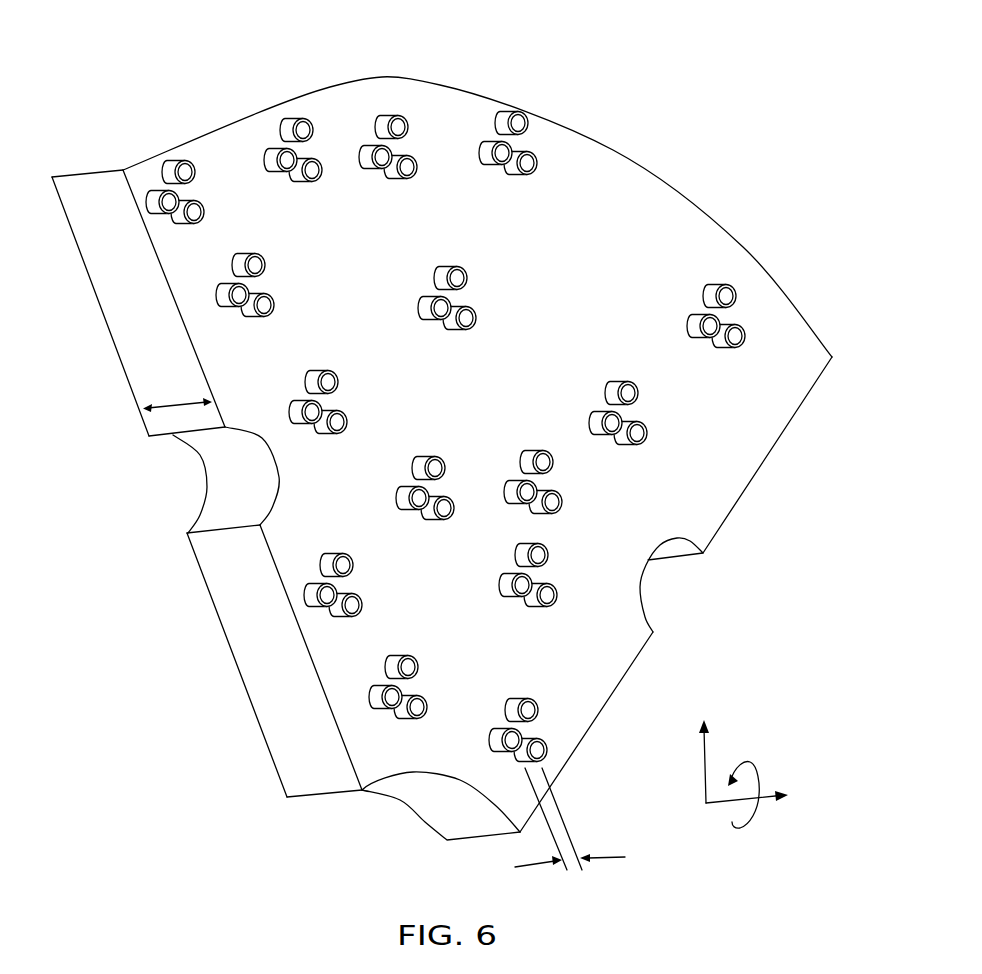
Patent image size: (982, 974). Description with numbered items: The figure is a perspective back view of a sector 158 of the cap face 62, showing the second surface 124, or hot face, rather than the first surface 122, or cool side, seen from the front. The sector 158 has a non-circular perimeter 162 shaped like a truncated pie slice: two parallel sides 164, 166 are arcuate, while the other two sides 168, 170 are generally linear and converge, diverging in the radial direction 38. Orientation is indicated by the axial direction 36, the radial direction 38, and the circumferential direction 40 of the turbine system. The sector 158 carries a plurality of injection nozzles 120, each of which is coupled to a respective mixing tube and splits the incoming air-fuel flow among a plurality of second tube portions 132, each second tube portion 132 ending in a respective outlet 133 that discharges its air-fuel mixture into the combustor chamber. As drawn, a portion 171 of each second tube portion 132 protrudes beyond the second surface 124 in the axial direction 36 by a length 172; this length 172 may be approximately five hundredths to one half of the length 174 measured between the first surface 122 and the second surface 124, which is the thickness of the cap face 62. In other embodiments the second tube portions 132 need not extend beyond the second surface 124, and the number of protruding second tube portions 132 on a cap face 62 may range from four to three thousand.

The cap face 62 is at (442, 472).
The injection nozzle 120 is at (390, 113).
The second tube portion 132 is at (530, 147).
The outlet 133 is at (734, 330).
The sector 158 is at (172, 122).
The perimeter 162 is at (207, 435).
The side 164 is at (90, 163).
The first surface 122 is at (97, 302).
The second surface 124 is at (698, 508).
The side 166 is at (440, 803).
The side 168 is at (672, 548).
The side 170 is at (152, 398).
The portion 171 is at (220, 300).
The length 172 is at (607, 858).
The length 174 is at (177, 405).
The axial axis or direction 36 is at (768, 803).
The radial axis or direction 38 is at (706, 747).
The circumferential axis or direction 40 is at (762, 767).